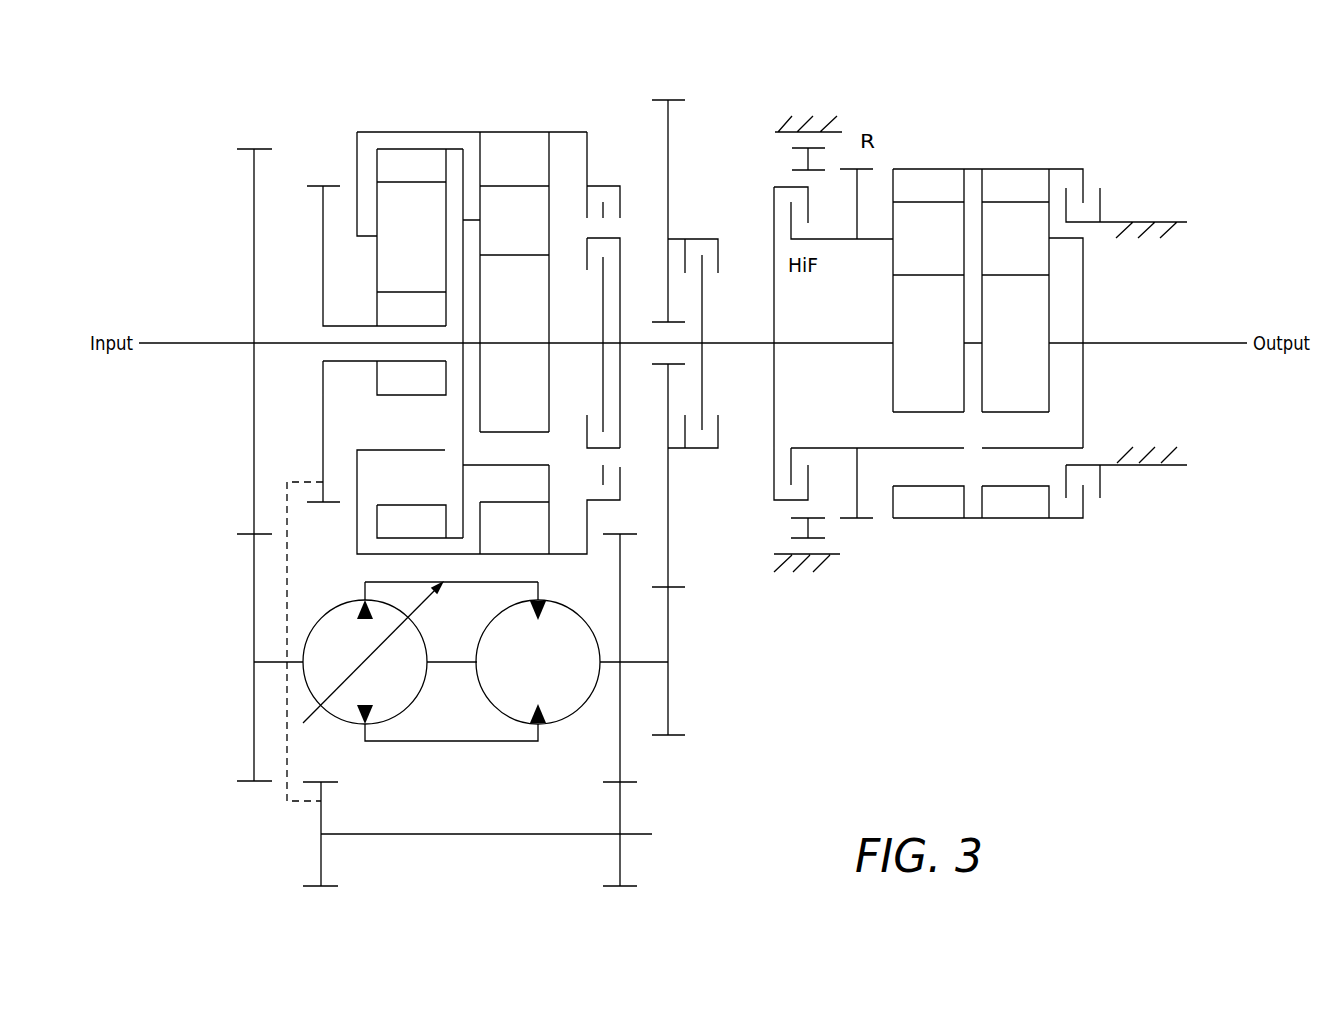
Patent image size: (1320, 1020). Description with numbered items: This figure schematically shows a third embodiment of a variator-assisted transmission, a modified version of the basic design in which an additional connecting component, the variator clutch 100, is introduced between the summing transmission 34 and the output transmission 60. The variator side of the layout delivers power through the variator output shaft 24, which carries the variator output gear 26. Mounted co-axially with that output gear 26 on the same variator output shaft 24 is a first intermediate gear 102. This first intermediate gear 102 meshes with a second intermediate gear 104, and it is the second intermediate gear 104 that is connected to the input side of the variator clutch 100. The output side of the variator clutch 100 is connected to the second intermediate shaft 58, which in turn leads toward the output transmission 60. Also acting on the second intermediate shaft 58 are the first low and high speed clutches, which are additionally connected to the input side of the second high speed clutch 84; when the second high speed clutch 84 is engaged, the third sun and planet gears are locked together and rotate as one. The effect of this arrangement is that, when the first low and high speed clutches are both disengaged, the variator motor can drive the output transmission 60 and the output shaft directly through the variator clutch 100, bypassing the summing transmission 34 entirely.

The summing transmission 34 is at (466, 115).
The second intermediate gear 104 is at (667, 122).
The variator clutch 100 is at (711, 238).
The second high speed clutch 84 is at (779, 186).
The output transmission 60 is at (963, 151).
The second intermediate shaft 58 is at (832, 343).
The first intermediate gear 102 is at (668, 633).
The variator output shaft 24 is at (650, 663).
The variator output gear 26 is at (620, 760).